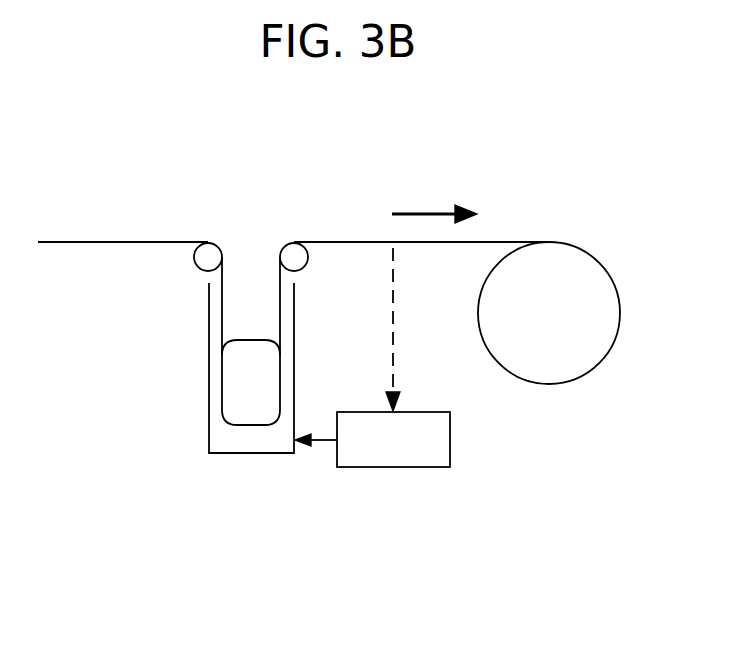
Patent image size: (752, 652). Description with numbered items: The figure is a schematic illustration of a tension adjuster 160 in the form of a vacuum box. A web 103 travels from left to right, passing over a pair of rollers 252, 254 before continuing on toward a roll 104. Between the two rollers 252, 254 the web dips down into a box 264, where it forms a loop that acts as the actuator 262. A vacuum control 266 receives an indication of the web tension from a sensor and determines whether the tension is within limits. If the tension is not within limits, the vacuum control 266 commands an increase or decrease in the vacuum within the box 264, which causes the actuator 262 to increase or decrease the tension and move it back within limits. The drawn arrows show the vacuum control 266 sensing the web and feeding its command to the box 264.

The web buffer system 160 is at (315, 127).
The web 103 is at (120, 242).
The take-up roll 104 is at (578, 263).
The roller 252 is at (222, 243).
The roller 254 is at (285, 243).
The actuator 262 is at (222, 398).
The box 264 is at (208, 325).
The vacuum control 266 is at (420, 453).